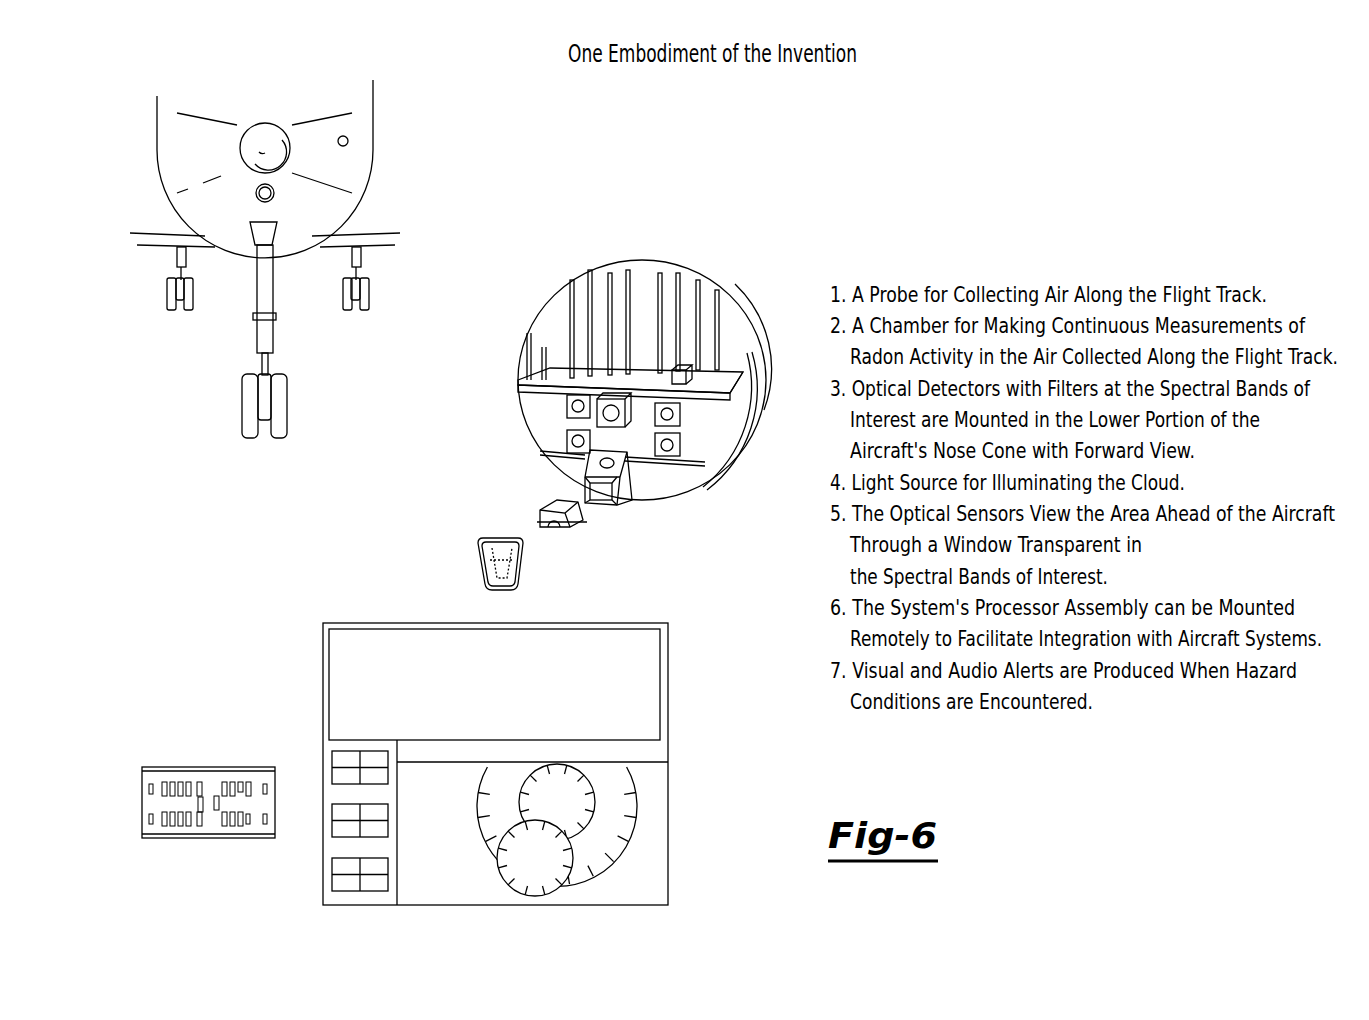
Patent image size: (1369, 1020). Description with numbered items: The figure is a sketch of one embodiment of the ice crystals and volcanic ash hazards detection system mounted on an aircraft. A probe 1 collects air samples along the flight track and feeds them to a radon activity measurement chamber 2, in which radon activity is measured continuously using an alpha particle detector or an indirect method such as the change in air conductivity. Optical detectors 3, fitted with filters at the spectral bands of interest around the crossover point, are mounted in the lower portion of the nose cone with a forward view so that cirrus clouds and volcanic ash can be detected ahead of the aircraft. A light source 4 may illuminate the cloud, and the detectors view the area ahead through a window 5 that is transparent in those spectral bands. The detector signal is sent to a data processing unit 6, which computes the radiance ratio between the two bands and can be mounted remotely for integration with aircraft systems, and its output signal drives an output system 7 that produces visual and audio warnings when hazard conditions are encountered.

The probe 1 is at (352, 144).
The radon activity measurement chamber 2 is at (676, 367).
The optical detector 3 is at (278, 240).
The light source 4 is at (253, 188).
The window 5 is at (527, 570).
The data processing unit 6 is at (194, 765).
The output system 7 is at (397, 626).